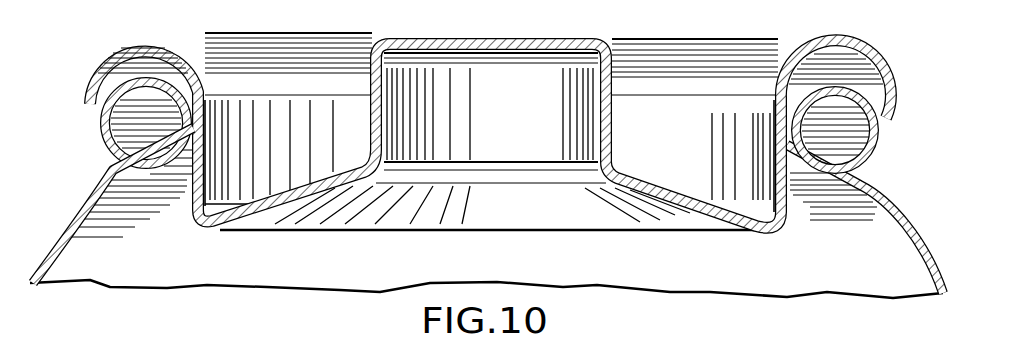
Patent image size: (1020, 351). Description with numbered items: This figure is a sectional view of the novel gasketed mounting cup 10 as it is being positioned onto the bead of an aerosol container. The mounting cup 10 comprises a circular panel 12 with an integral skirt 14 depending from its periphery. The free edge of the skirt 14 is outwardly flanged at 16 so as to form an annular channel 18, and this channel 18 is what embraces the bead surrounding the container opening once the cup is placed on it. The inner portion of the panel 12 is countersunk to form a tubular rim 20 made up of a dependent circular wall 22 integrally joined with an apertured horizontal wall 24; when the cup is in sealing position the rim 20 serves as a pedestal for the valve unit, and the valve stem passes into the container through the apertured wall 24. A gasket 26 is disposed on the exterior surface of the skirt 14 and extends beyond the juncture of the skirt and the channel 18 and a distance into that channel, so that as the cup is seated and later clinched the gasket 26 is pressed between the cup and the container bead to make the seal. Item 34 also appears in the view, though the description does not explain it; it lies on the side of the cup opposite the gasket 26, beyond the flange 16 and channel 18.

The mounting cup 10 is at (160, 189).
The circular panel 12 is at (667, 225).
The skirt 14 is at (193, 205).
The outward flange 16 is at (875, 57).
The annular channel 18 is at (880, 86).
The tubular rim 20 is at (623, 97).
The dependent circular wall 22 is at (366, 74).
The apertured horizontal wall 24 is at (570, 38).
The gasket 26 is at (117, 168).
The skirt flange 34 is at (873, 190).